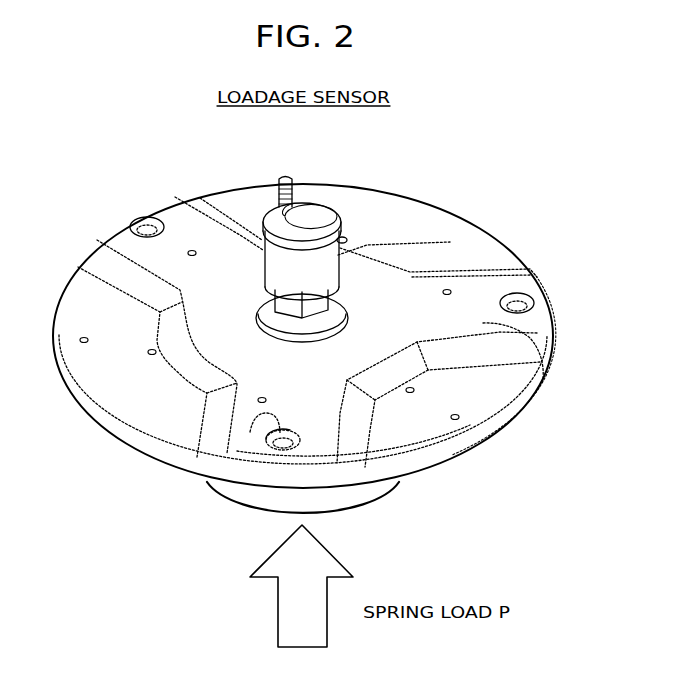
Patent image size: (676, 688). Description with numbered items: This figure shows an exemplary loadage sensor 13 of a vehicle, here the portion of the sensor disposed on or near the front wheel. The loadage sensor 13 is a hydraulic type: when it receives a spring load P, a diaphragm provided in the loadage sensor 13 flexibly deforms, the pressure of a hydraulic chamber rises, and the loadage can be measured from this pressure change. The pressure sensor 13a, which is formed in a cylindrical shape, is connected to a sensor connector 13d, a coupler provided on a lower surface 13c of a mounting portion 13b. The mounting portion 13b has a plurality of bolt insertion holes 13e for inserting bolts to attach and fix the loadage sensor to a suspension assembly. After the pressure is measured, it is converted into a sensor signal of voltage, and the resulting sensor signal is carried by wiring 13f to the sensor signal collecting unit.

The loadage sensor 13 is at (447, 197).
The pressure sensor 13a is at (450, 242).
The mounting portion 13b is at (553, 318).
The lower surface 13c is at (548, 358).
The sensor connector 13d is at (256, 320).
The bolt insertion hole 13e is at (145, 217).
The wiring 13f is at (294, 186).